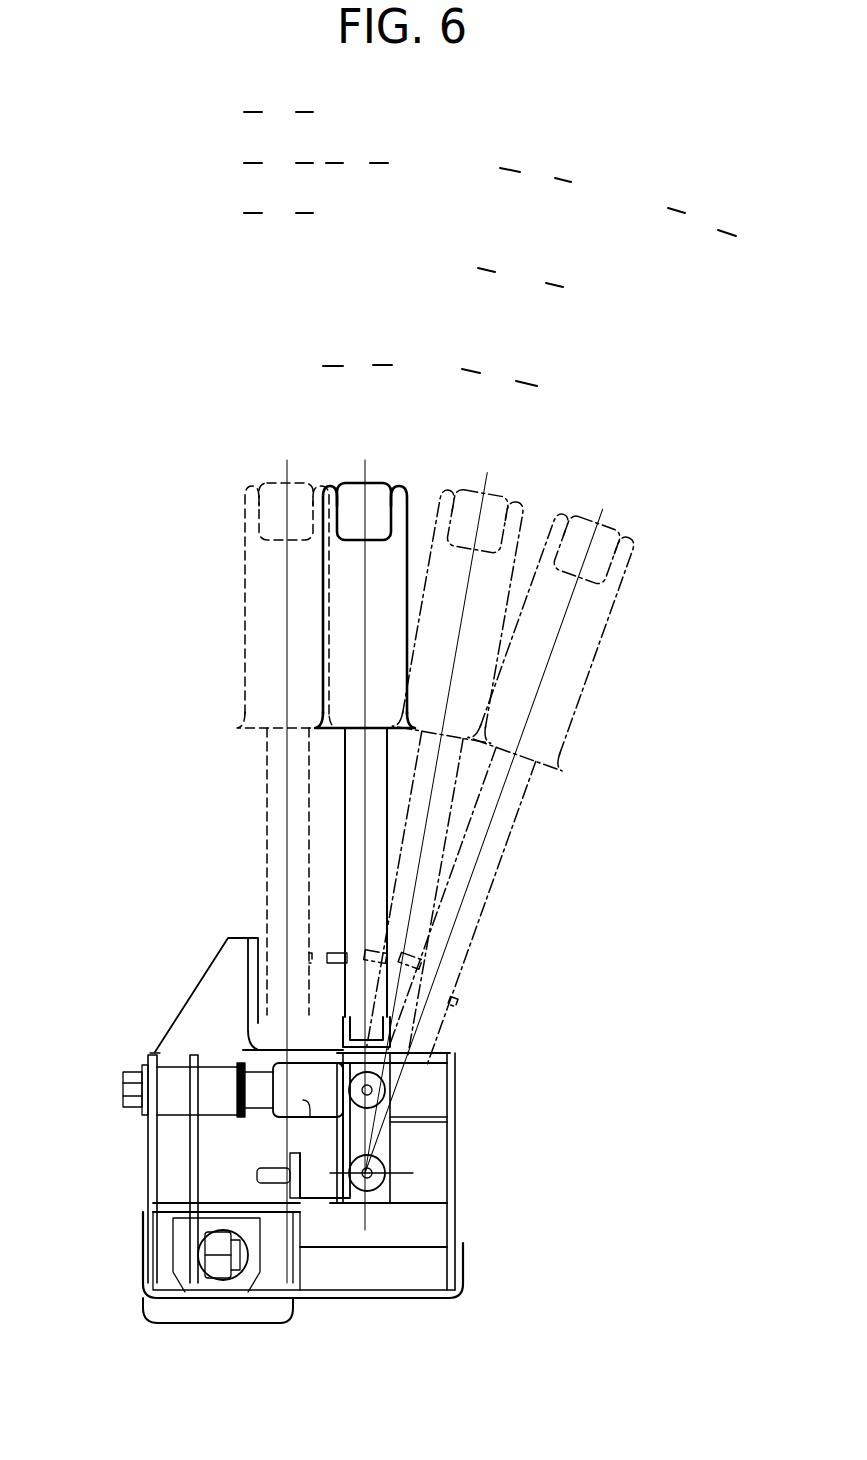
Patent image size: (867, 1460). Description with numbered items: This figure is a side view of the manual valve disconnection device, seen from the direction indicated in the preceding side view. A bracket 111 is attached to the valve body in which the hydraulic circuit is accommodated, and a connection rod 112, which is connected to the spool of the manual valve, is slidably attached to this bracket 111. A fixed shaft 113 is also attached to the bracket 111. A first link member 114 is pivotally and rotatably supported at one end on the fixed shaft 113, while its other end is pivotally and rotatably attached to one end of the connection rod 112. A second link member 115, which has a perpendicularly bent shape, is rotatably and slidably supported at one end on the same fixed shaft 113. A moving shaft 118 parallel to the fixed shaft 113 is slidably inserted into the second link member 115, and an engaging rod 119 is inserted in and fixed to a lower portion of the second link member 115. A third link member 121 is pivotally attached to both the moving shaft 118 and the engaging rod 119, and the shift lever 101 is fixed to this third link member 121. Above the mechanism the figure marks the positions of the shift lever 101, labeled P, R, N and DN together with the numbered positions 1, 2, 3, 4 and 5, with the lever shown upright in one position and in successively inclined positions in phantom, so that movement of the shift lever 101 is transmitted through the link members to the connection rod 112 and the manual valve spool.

The shift lever 101 is at (593, 651).
The bracket 111 is at (407, 1300).
The connection rod 112 is at (218, 1282).
The fixed shaft 113 is at (437, 1082).
The first link member 114 is at (192, 1140).
The second link member 115 is at (319, 1182).
The moving shaft 118 is at (257, 1083).
The engaging rod 119 is at (275, 1185).
The third link member 121 is at (392, 1128).
The detent position 1 is at (357, 163).
The detent position 2 is at (357, 369).
The detent position 3 is at (535, 178).
The detent position 4 is at (499, 379).
The detent position 5 is at (702, 223).
The park position P is at (278, 113).
The reverse position R is at (278, 163).
The neutral position N is at (278, 214).
The drive position DN is at (520, 278).